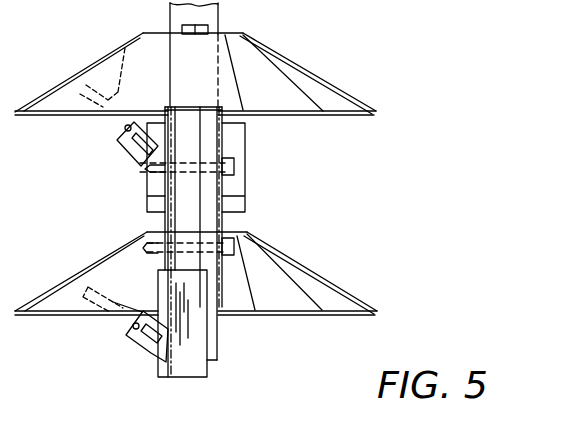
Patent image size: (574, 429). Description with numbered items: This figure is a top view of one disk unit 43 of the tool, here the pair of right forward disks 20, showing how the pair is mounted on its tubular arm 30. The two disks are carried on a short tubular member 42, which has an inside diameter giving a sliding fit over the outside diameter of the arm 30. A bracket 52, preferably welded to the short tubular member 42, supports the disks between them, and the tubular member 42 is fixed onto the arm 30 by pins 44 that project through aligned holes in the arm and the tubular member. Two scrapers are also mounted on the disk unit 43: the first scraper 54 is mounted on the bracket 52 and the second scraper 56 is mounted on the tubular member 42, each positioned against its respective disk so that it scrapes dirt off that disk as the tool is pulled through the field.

The pair of right forward disks 20 is at (343, 297).
The arm 30 is at (220, 19).
The short tubular member 42 is at (227, 223).
The disk unit 43 is at (449, 204).
The pins 44 is at (235, 167).
The bracket 52 is at (245, 143).
The first scraper 54 is at (125, 127).
The second scraper 56 is at (131, 326).